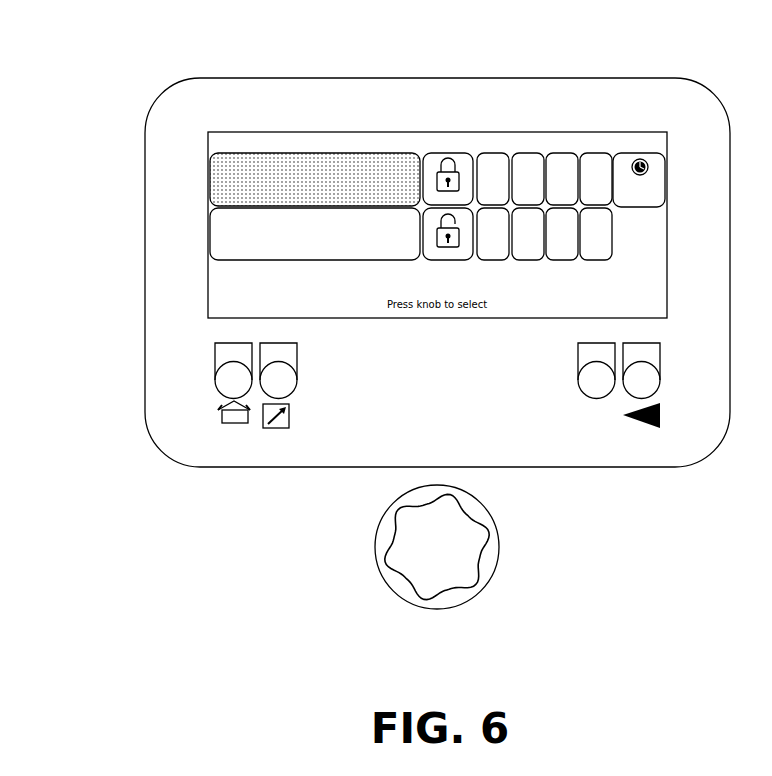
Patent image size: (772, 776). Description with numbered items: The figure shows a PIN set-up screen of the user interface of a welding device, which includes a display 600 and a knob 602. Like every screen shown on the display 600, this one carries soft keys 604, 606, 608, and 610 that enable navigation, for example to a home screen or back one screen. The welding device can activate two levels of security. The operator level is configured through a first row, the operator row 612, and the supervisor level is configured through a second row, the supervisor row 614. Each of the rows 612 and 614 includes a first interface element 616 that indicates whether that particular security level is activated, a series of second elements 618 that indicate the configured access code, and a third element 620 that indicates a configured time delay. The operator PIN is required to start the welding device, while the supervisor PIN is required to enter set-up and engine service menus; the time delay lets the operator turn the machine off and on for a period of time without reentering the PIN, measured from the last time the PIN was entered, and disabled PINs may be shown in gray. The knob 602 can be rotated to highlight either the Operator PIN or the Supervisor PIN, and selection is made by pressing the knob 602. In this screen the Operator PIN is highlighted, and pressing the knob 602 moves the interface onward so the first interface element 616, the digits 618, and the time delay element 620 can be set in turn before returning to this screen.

The display 600 is at (579, 78).
The knob 602 is at (490, 582).
The soft key 604 is at (232, 368).
The soft key 606 is at (296, 366).
The soft key 608 is at (584, 368).
The soft key 610 is at (659, 367).
The operator row 612 is at (198, 180).
The supervisor row 614 is at (198, 234).
The first interface element 616 is at (445, 154).
The second elements 618 is at (520, 146).
The third element 620 is at (642, 154).